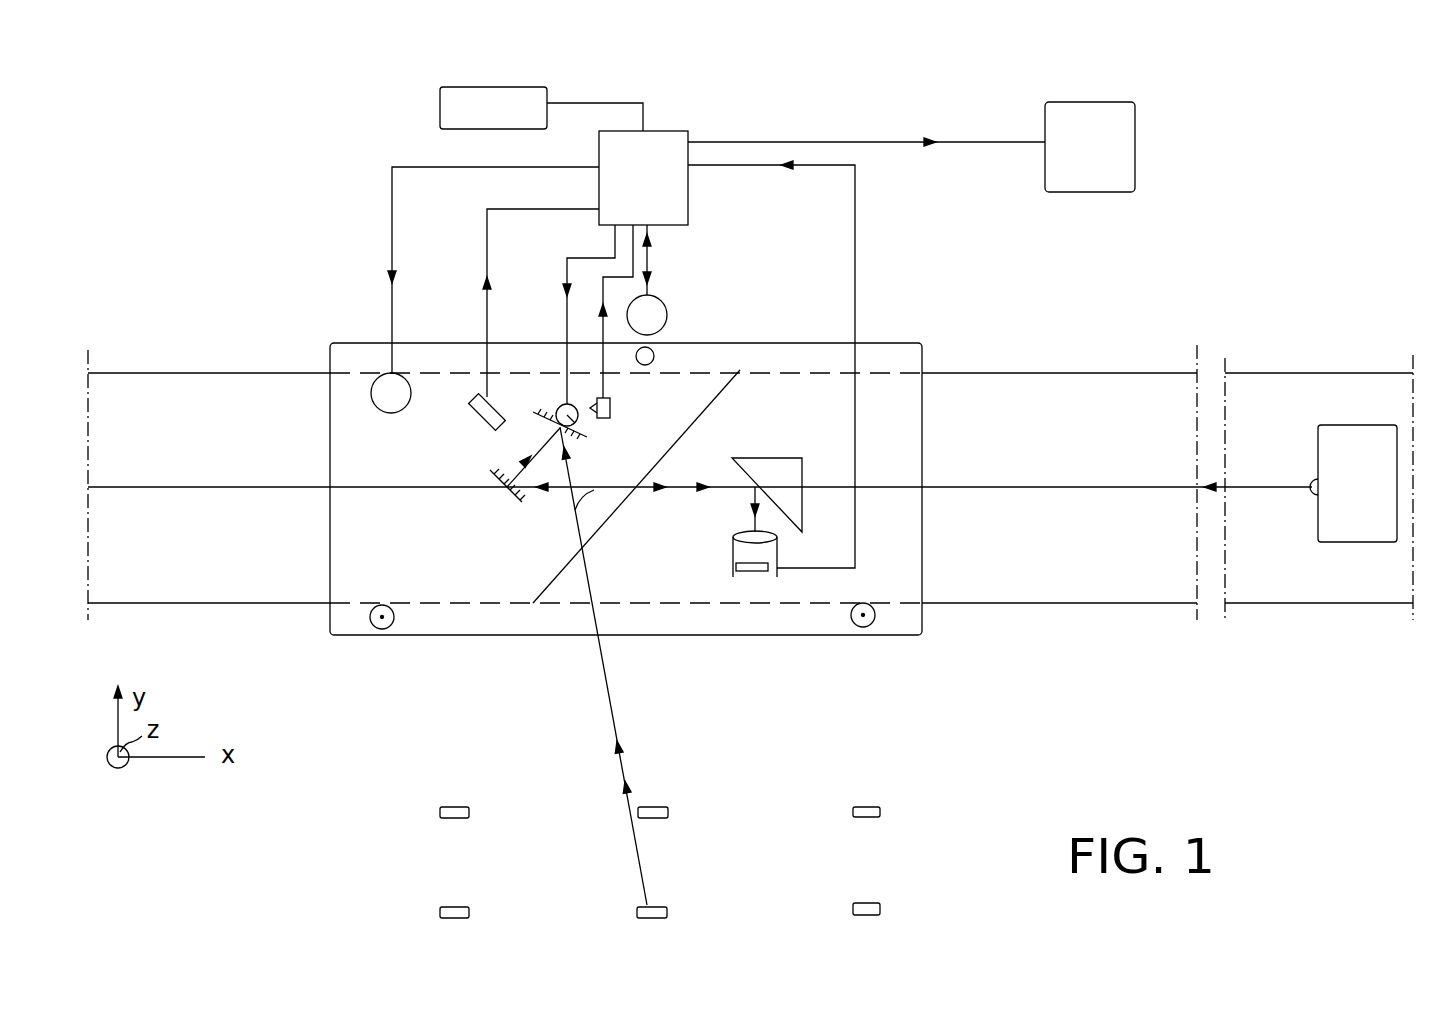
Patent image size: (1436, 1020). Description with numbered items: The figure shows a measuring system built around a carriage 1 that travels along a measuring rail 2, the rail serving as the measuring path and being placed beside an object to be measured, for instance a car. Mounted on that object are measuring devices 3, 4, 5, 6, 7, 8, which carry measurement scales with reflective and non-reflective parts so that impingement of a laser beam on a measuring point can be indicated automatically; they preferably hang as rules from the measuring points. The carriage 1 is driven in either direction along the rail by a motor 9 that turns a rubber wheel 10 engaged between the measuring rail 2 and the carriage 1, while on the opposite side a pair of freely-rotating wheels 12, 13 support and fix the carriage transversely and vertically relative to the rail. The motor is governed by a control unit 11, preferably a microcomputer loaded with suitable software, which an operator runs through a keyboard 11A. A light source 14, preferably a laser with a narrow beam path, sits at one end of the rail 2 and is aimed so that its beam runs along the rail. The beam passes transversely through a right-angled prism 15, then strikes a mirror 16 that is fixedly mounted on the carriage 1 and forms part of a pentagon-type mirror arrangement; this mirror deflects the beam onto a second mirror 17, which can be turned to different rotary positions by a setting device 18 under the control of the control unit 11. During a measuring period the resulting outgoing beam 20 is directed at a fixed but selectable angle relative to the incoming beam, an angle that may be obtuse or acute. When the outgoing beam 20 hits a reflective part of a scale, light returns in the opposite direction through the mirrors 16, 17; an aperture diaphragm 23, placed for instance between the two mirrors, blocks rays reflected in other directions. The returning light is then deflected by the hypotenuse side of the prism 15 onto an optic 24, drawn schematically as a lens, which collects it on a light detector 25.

The carriage 1 is at (890, 342).
The measuring rail 2 is at (1140, 373).
The measuring device 3 is at (460, 907).
The measuring device 4 is at (658, 907).
The measuring device 5 is at (866, 903).
The measuring device 6 is at (870, 807).
The measuring device 7 is at (660, 807).
The measuring device 8 is at (454, 807).
The motor 9 is at (666, 310).
The rubber wheel 10 is at (646, 365).
The control unit 11 is at (688, 192).
The keyboard 11A is at (440, 107).
The freely-rotating wheel 12 is at (868, 603).
The freely-rotating wheel 13 is at (384, 605).
The light source 14 is at (1318, 538).
The right-angled prism 15 is at (780, 457).
The mirror 16 is at (513, 500).
The mirror 17 is at (578, 438).
The setting device 18 is at (561, 406).
The outgoing beam 20 is at (602, 738).
The aperture diaphragm 23 is at (703, 418).
The optic 24 is at (728, 509).
The light detector 25 is at (748, 575).